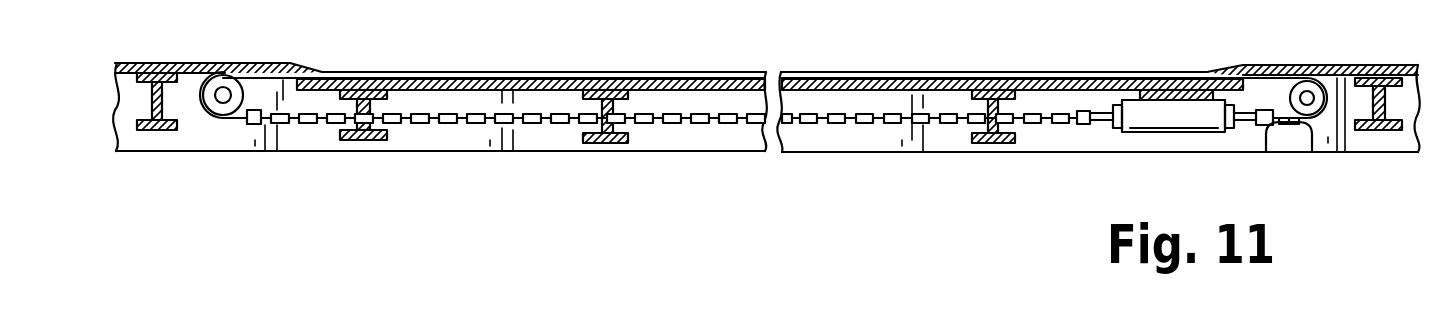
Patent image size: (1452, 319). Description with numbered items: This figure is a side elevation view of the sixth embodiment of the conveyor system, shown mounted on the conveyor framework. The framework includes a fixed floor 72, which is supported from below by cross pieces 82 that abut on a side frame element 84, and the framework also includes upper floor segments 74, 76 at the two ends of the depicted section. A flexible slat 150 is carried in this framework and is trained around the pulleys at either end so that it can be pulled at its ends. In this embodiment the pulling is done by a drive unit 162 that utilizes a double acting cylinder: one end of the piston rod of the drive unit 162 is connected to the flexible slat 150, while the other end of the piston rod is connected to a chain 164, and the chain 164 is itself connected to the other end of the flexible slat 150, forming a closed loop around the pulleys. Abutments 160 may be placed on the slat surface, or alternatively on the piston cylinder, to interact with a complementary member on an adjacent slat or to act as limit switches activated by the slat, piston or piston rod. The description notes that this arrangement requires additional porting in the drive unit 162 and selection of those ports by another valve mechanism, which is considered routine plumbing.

The fixed floor 72 is at (847, 100).
The upper floor segment 74 is at (231, 64).
The upper floor segment 76 is at (1313, 68).
The cross pieces 82 is at (349, 141).
The side frame element 84 is at (705, 133).
The flexible slat 150 is at (1136, 72).
The abutments 160 is at (1312, 152).
The drive unit 162 is at (1193, 136).
The chain 164 is at (947, 123).